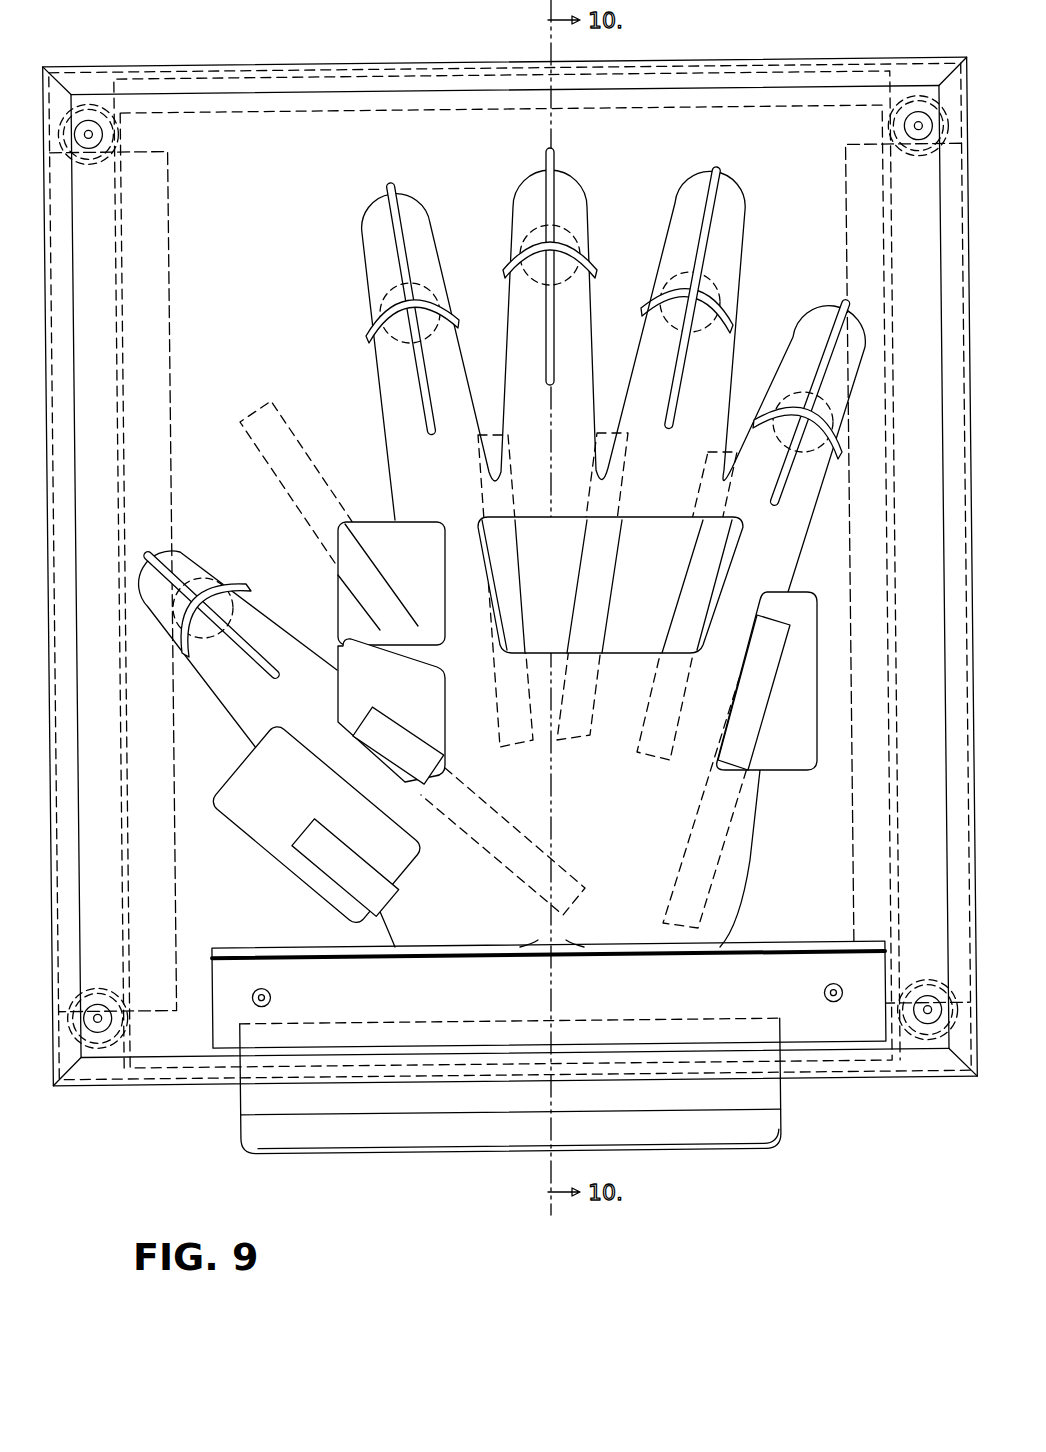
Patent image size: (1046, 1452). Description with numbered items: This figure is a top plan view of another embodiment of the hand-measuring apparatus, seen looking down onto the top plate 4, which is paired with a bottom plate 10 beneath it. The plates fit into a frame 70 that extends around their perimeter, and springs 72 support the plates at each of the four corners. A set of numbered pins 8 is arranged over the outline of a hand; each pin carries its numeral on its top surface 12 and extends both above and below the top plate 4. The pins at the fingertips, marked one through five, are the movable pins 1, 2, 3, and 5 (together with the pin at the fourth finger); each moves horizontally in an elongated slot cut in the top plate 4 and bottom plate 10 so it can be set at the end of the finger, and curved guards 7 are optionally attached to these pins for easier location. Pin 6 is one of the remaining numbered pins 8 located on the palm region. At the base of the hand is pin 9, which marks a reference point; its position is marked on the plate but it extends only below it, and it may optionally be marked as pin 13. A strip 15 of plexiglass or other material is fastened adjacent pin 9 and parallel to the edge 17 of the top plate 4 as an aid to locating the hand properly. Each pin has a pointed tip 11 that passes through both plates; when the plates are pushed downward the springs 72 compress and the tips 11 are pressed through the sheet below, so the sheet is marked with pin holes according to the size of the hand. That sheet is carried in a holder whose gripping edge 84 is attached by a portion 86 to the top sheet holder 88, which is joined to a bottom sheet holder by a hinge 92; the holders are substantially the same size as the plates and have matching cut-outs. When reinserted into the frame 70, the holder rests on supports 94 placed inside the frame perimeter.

The pin (finger pin No. 1) 1 is at (212, 617).
The pin (finger pin No. 2) 2 is at (412, 313).
The pin (finger pin No. 3) 3 is at (550, 255).
The top plate 4 is at (157, 1042).
The pin (finger pin No. 5) 5 is at (797, 425).
The pin (No. 6) 6 is at (697, 586).
The guard 7 is at (237, 580).
The pin 8 is at (333, 845).
The pin (reference pin) 9 is at (580, 930).
The bottom plate 10 is at (391, 583).
The pointed tip 11 is at (316, 825).
The top surface 12 is at (767, 681).
The pin 9 marking (No. 13) 13 is at (552, 943).
The strip 15 is at (223, 1010).
The edge 17 is at (817, 1080).
The frame 70 is at (85, 70).
The spring 72 is at (104, 110).
The edge 84 is at (292, 1138).
The portion 86 is at (253, 1101).
The top sheet holder 88 is at (207, 128).
The hinge 92 is at (278, 76).
The support 94 is at (162, 172).